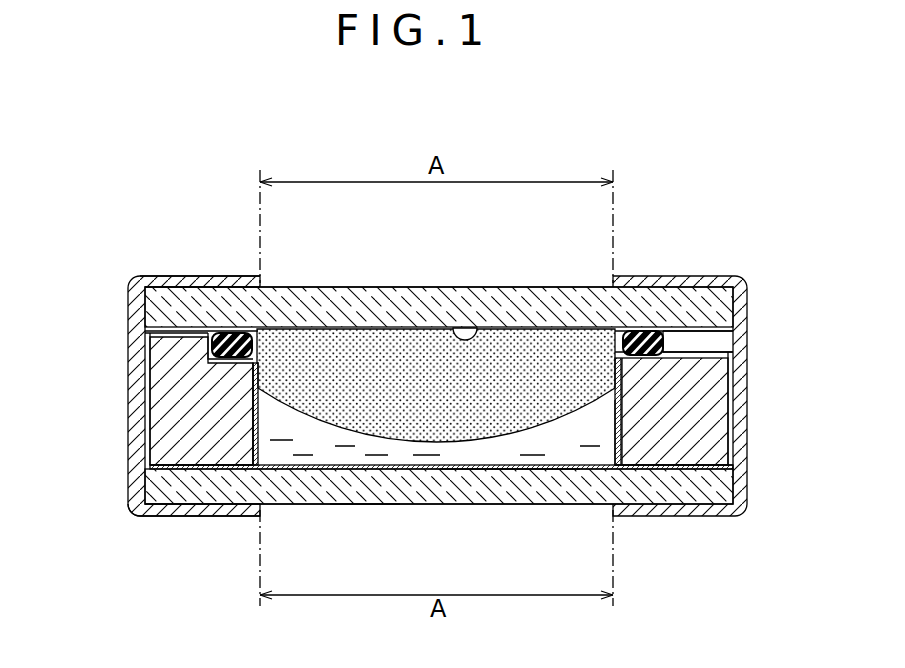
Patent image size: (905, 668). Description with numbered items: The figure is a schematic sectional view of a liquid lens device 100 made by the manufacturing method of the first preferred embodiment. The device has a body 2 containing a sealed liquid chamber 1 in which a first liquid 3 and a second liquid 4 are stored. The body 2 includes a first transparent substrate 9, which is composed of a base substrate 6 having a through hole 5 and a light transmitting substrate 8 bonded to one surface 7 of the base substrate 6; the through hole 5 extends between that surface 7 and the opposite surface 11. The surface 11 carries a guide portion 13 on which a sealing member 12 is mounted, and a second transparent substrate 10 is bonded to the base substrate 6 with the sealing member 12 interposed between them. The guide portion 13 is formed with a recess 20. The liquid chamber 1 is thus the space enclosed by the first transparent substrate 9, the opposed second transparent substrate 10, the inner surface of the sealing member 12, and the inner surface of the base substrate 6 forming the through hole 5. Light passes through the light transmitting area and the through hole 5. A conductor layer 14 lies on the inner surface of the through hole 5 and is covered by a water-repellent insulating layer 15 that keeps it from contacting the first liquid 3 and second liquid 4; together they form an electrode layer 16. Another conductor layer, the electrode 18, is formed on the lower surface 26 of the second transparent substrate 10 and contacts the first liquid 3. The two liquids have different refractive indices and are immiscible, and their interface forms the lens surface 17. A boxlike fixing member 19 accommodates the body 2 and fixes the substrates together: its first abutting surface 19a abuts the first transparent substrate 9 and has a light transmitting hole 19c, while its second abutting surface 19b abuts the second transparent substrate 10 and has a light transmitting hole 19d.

The liquid lens device 100 is at (553, 152).
The liquid chamber 1 is at (514, 455).
The body 2 is at (346, 287).
The first liquid 3 is at (425, 355).
The second liquid 4 is at (402, 447).
The through hole 5 is at (262, 449).
The base substrate 6 is at (700, 410).
The one surface 7 is at (215, 478).
The light transmitting substrate 8 is at (478, 472).
The first transparent substrate 9 is at (363, 506).
The second transparent substrate 10 is at (385, 312).
The another surface 11 is at (234, 333).
The sealing member 12 is at (620, 345).
The guide portion 13 is at (178, 366).
The conductor layer 14 is at (655, 500).
The insulating layer 15 is at (540, 480).
The electrode layer 16 is at (607, 427).
The lens surface 17 is at (442, 457).
The electrode 18 is at (688, 313).
The fixing member 19 is at (125, 403).
The first abutting surface 19a is at (167, 506).
The second abutting surface 19b is at (200, 287).
The light transmitting hole 19c is at (263, 510).
The light transmitting hole 19d is at (262, 283).
The recess 20 is at (717, 343).
The lower surface 26 is at (458, 330).